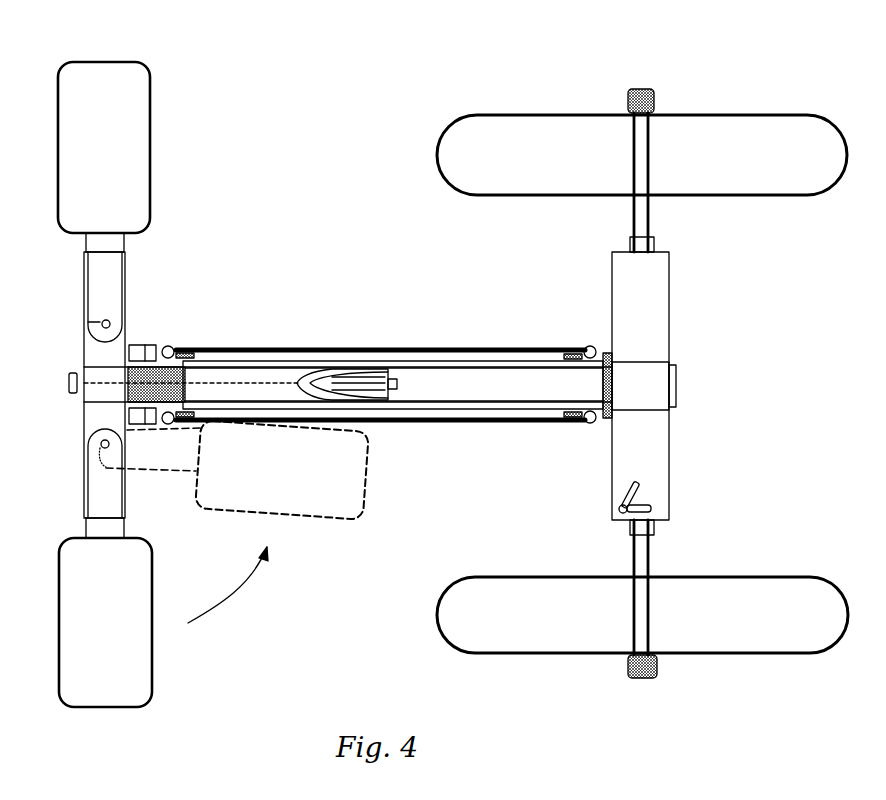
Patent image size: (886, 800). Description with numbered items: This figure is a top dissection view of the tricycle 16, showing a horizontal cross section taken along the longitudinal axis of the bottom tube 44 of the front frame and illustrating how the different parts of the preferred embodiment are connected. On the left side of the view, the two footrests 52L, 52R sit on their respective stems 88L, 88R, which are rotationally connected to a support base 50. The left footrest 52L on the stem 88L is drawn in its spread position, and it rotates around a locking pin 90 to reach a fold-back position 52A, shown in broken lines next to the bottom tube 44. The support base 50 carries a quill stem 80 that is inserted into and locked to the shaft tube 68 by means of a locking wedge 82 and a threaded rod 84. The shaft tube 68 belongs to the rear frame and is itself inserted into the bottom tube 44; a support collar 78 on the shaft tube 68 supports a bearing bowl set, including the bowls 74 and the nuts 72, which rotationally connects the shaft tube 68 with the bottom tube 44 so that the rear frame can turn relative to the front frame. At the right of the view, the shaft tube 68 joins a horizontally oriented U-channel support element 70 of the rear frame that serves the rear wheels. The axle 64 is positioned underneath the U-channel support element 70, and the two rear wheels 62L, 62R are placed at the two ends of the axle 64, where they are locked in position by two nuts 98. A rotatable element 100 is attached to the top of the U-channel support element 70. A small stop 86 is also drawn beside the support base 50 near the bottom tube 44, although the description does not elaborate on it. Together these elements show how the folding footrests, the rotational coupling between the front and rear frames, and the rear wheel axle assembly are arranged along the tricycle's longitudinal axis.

The tricycle 16 is at (322, 98).
The bottom tube 44 is at (515, 350).
The support base 50 is at (85, 495).
The right footrest 52R is at (150, 160).
The left footrest 52L is at (152, 646).
The fold-back position 52A is at (367, 482).
The right rear wheel 62R is at (737, 113).
The left rear wheel 62L is at (807, 575).
The axle 64 is at (648, 213).
The shaft tube 68 is at (455, 365).
The U-channel support element 70 is at (670, 312).
The nuts 72 is at (150, 347).
The bowls 74 is at (590, 428).
The support collar 78 is at (602, 353).
The quill stem 80 is at (272, 366).
The locking wedge 82 is at (360, 368).
The threaded rod 84 is at (395, 370).
The stop member 86 is at (74, 373).
The right stem 88R is at (125, 243).
The left stem 88L is at (125, 525).
The locking pin 90 is at (101, 446).
The nuts 98 is at (628, 100).
The rotatable element 100 is at (620, 510).